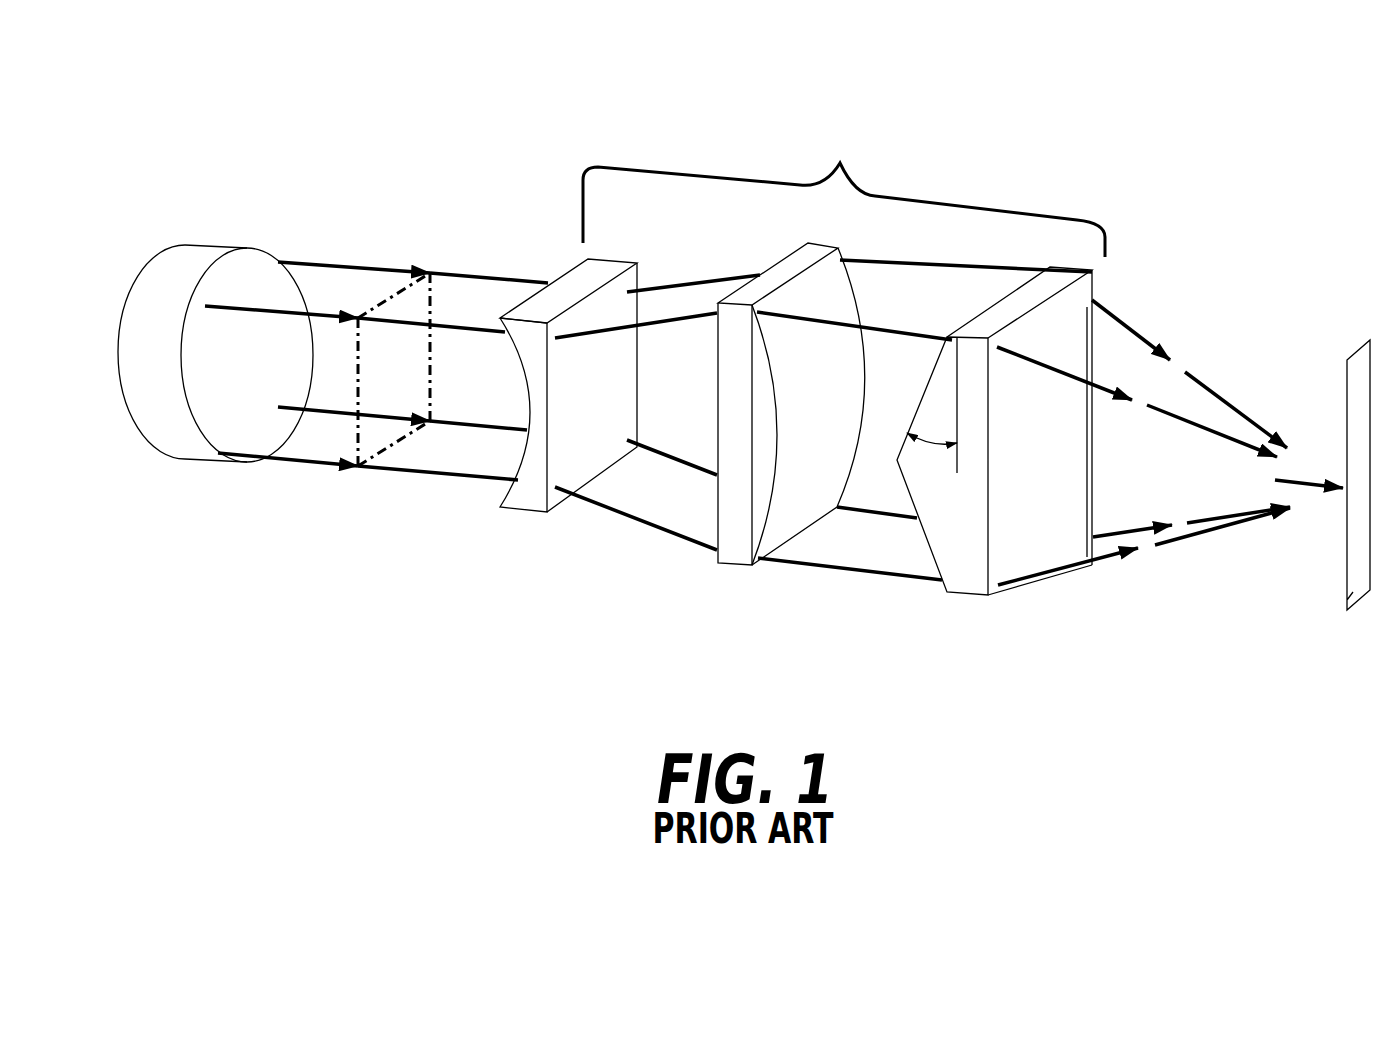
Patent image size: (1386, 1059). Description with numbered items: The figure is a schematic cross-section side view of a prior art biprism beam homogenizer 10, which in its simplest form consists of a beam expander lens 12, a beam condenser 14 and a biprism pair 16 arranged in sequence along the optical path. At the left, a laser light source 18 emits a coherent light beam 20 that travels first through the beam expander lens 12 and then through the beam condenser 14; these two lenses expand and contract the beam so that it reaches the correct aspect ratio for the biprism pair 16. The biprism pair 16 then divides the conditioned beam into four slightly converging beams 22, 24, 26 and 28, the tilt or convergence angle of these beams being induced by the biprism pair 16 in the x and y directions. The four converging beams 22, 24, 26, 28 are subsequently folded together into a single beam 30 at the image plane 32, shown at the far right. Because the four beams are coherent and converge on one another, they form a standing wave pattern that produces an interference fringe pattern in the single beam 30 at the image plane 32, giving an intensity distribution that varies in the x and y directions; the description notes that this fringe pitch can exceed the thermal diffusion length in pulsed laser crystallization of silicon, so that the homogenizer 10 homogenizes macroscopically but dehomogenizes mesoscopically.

The homogenizer 10 is at (840, 163).
The beam expander lens 12 is at (530, 493).
The beam condenser 14 is at (742, 540).
The biprism pair 16 is at (970, 568).
The laser light source 18 is at (163, 430).
The coherent light beam 20 is at (287, 457).
The converging beam 22 is at (1125, 322).
The converging beam 24 is at (1057, 370).
The converging beam 26 is at (1107, 557).
The converging beam 28 is at (1125, 530).
The single beam 30 is at (1302, 482).
The image plane 32 is at (1340, 597).